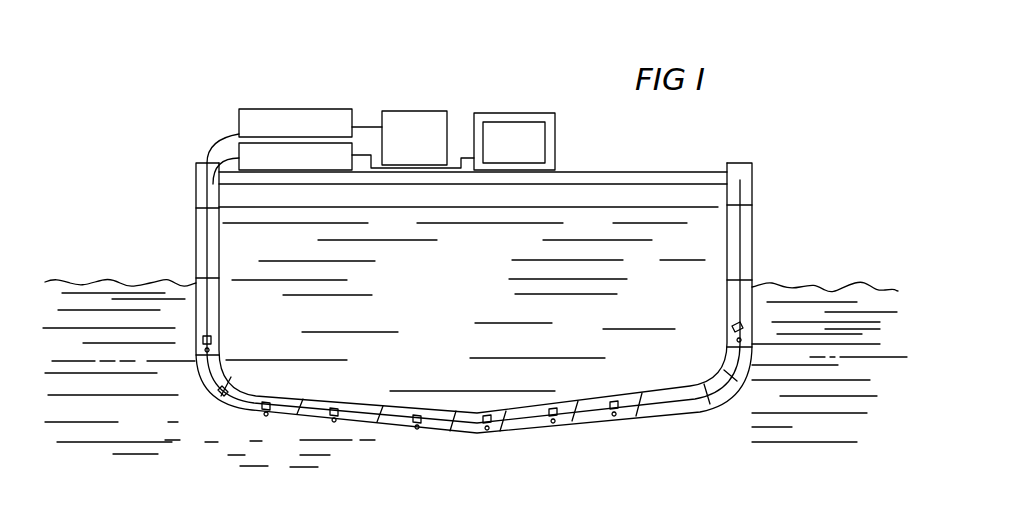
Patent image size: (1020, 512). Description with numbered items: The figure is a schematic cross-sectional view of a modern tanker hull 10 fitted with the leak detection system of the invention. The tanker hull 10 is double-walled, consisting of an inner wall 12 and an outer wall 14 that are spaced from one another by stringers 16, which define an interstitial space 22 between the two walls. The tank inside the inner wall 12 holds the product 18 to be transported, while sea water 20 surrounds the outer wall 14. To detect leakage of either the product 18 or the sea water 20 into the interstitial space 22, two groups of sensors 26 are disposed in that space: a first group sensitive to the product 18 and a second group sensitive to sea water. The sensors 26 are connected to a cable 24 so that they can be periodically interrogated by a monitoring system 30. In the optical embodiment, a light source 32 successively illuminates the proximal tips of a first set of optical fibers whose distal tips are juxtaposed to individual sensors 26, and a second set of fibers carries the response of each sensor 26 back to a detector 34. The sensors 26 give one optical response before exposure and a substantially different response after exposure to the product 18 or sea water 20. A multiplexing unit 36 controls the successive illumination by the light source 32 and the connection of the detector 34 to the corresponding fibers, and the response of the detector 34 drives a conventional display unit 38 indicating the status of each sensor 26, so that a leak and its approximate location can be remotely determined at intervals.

The tanker hull 10 is at (170, 217).
The inner wall 12 is at (220, 264).
The outer wall 14 is at (195, 283).
The stringers 16 is at (298, 409).
The product 18 is at (461, 287).
The sea water 20 is at (157, 434).
The interstitial space 22 is at (224, 398).
The cable 24 is at (205, 163).
The sensors 26 is at (208, 388).
The monitoring system 30 is at (403, 63).
The light source 32 is at (307, 109).
The detector 34 is at (248, 139).
The multiplexing unit 36 is at (403, 111).
The display unit 38 is at (500, 113).